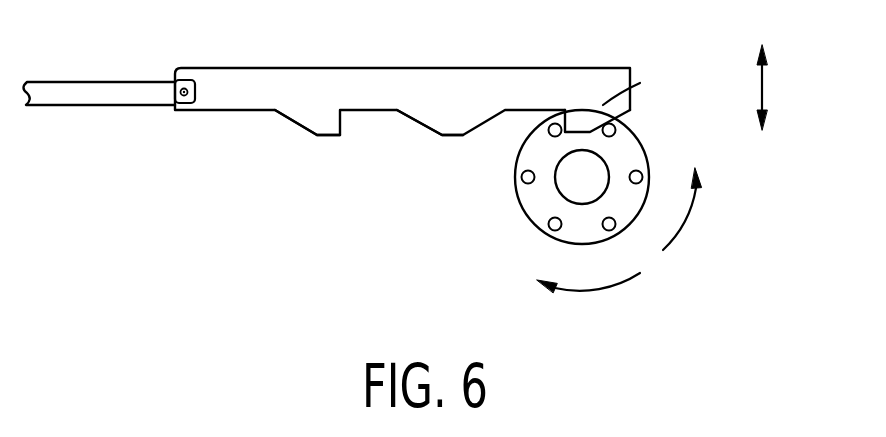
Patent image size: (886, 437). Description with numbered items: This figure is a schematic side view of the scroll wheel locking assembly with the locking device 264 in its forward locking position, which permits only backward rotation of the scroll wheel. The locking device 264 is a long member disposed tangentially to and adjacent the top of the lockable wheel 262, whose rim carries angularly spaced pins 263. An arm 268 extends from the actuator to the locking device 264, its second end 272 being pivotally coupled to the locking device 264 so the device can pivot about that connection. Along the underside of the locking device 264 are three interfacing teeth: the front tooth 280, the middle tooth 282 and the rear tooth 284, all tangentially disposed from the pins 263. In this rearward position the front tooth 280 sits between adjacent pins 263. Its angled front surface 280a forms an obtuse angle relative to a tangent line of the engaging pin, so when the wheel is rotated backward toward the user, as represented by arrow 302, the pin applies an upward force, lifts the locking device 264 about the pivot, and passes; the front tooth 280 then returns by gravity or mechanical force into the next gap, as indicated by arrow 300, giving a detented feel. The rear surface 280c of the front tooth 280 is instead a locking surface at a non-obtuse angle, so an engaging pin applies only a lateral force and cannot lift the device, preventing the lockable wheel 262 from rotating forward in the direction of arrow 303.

The lockable wheel 262 is at (535, 198).
The pins 263 is at (545, 224).
The locking device 264 is at (613, 82).
The arm 268 is at (97, 93).
The second end 272 is at (185, 96).
The front tooth 280 is at (640, 83).
The angled front surface 280a is at (617, 114).
The rear surface 280c is at (560, 115).
The middle tooth 282 is at (450, 119).
The rear tooth 284 is at (322, 120).
The arrow 300 is at (765, 88).
The arrow 302 is at (683, 225).
The arrow 303 is at (600, 288).